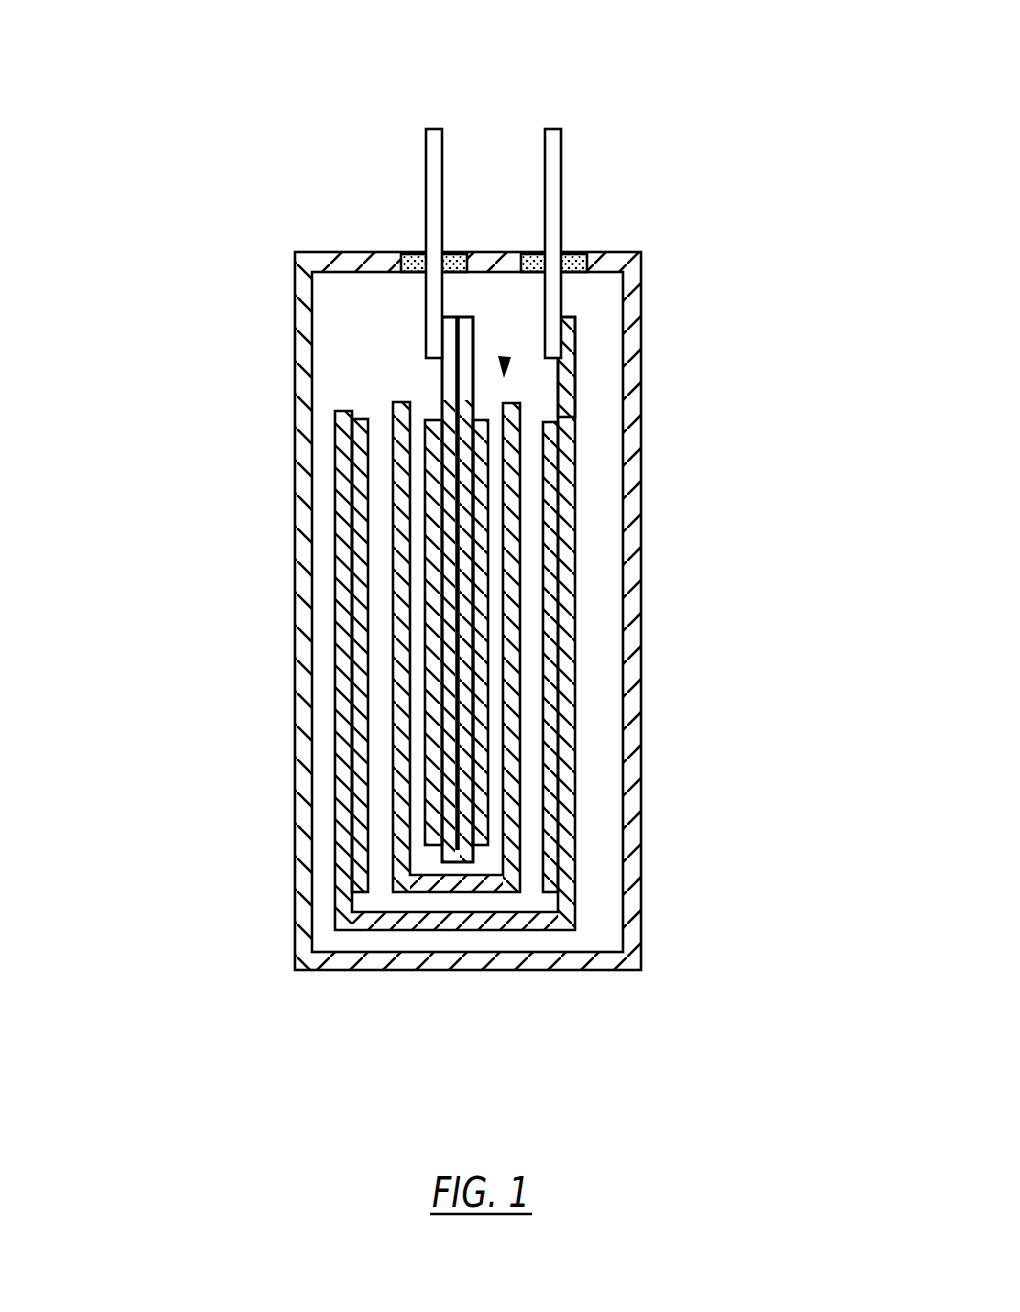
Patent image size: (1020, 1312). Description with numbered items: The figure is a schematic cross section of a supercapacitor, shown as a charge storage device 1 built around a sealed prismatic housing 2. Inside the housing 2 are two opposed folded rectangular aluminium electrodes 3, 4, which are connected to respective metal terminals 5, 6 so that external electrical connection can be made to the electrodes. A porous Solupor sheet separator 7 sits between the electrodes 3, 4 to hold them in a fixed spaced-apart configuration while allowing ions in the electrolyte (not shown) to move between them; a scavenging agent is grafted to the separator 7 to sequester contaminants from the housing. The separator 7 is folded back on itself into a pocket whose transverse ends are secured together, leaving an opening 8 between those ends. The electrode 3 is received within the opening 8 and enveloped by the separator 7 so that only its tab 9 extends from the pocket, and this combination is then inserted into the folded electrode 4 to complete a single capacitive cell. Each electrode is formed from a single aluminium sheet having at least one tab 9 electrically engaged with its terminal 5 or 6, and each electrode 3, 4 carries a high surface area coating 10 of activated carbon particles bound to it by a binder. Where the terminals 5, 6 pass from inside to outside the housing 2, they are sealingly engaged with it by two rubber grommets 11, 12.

The charge storage device 1 is at (198, 822).
The sealed prismatic housing 2 is at (641, 884).
The electrode 3 is at (458, 442).
The electrode 4 is at (557, 538).
The metal terminal 5 is at (426, 152).
The metal terminal 6 is at (561, 157).
The sheet separator 7 is at (518, 645).
The opening 8 is at (504, 358).
The tab 9 is at (577, 342).
The high surface area coating 10 is at (428, 466).
The rubber grommet 11 is at (413, 253).
The rubber grommet 12 is at (580, 253).